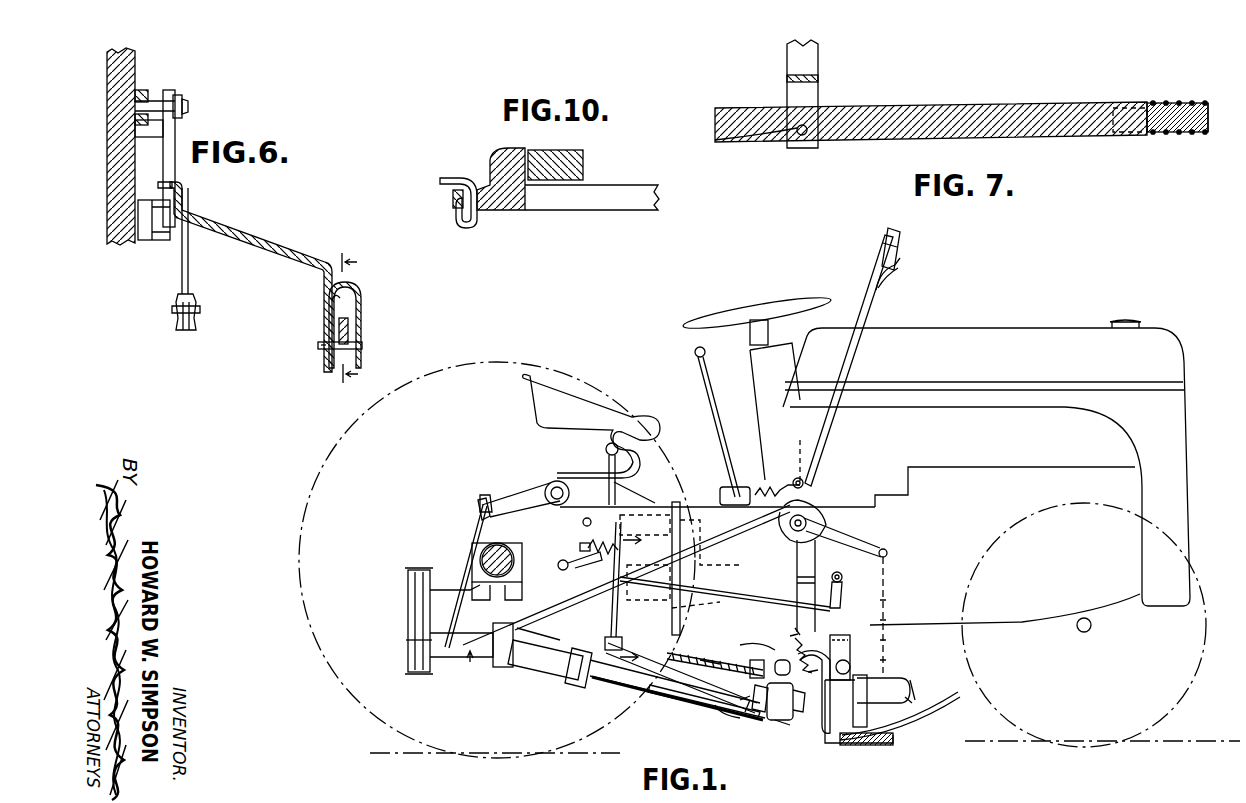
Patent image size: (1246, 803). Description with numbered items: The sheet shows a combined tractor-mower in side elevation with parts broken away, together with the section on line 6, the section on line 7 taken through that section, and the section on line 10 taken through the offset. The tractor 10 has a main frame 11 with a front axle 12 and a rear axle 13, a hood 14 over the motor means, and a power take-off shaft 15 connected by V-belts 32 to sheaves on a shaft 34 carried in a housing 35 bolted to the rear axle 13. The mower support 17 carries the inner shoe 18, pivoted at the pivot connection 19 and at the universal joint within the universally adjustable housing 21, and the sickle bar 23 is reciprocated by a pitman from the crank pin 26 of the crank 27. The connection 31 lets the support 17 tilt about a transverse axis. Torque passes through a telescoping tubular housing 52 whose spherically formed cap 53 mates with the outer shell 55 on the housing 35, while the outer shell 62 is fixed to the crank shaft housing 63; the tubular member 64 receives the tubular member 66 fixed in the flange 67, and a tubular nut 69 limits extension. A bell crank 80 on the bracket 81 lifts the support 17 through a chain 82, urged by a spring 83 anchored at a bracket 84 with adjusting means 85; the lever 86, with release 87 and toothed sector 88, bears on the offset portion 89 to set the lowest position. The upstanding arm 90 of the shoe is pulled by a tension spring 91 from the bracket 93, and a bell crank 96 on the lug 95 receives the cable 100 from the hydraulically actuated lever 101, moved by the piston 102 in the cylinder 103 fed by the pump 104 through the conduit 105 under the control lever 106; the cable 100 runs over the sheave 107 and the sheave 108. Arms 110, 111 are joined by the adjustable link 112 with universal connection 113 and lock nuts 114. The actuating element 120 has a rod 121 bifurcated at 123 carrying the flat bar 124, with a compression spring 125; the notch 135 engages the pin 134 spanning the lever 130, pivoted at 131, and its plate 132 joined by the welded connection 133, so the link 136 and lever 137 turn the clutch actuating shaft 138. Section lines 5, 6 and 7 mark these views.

In FIG. 1, the plate 5 is at (630, 700).
In FIG. 1, the section line 6- 6 is at (637, 599).
In FIG. 6, the section line 7- 7 is at (356, 319).
In FIG. 1, the tractor 10 is at (886, 514).
In FIG. 1, the main frame 11 is at (946, 616).
In FIG. 1, the front axle 12 is at (1092, 625).
In FIG. 1, the rear axle 13 is at (492, 547).
In FIG. 1, the hood 14 is at (1170, 350).
In FIG. 1, the power take-off shaft 15 is at (420, 602).
In FIG. 1, the support 17 is at (890, 680).
In FIG. 1, the inner shoe 18 is at (915, 738).
In FIG. 1, the pivot connection 19 is at (920, 690).
In FIG. 1, the universally adjustable housing 21 is at (783, 747).
In FIG. 1, the sickle bar 23 is at (867, 718).
In FIG. 1, the crank pin 26 is at (860, 746).
In FIG. 1, the crank 27 is at (880, 670).
In FIG. 1, the connection 31 is at (888, 634).
In FIG. 1, the V-belts 32 is at (408, 642).
In FIG. 1, the shaft 34 is at (410, 664).
In FIG. 1, the housing 35 is at (450, 662).
In FIG. 1, the tubular housing 52 is at (540, 670).
In FIG. 1, the spherically formed cap 53 is at (555, 632).
In FIG. 1, the spherically formed outer shell 55 is at (503, 670).
In FIG. 1, the outer shell 62 is at (768, 718).
In FIG. 1, the crank shaft housing 63 is at (805, 718).
In FIG. 1, the tubular member 64 is at (585, 692).
In FIG. 1, the tubular member 66 is at (715, 722).
In FIG. 1, the flange 67 is at (748, 714).
In FIG. 1, the tubular nut 69 is at (620, 720).
In FIG. 10, the bell crank 80 is at (570, 210).
In FIG. 1, the bell crank 80 is at (845, 542).
In FIG. 1, the bracket 81 is at (797, 560).
In FIG. 1, the chain 82 is at (884, 612).
In FIG. 10, the spring 83 is at (451, 178).
In FIG. 1, the spring 83 is at (762, 480).
In FIG. 1, the bracket 84 is at (570, 569).
In FIG. 1, the adjusting means 85 is at (592, 545).
In FIG. 10, the lever 86 is at (583, 152).
In FIG. 1, the lever 86 is at (850, 420).
In FIG. 1, the release 87 is at (900, 274).
In FIG. 1, the toothed sector 88 is at (818, 501).
In FIG. 10, the offset portion 89 is at (493, 163).
In FIG. 1, the offset portion 89 is at (801, 456).
In FIG. 1, the upstanding arm 90 is at (818, 688).
In FIG. 1, the tension spring 91 is at (803, 627).
In FIG. 1, the bracket 93 is at (790, 637).
In FIG. 1, the upstanding lug 95 is at (849, 667).
In FIG. 1, the bell crank 96 is at (850, 642).
In FIG. 1, the cable 100 is at (723, 490).
In FIG. 1, the hydraulically actuated lever 101 is at (515, 498).
In FIG. 1, the piston 102 is at (665, 507).
In FIG. 1, the hydraulic cylinder 103 is at (636, 492).
In FIG. 1, the pump 104 is at (695, 614).
In FIG. 1, the conduit 105 is at (700, 572).
In FIG. 1, the lever 106 is at (608, 472).
In FIG. 1, the sheave 107 is at (440, 602).
In FIG. 1, the sheave 108 is at (785, 530).
In FIG. 1, the arm 110 is at (730, 674).
In FIG. 1, the arm 111 is at (780, 662).
In FIG. 1, the adjustable link 112 is at (750, 668).
In FIG. 1, the universal connection 113 is at (747, 634).
In FIG. 1, the lock nuts 114 is at (720, 662).
In FIG. 7, the actuating element 120 is at (973, 145).
In FIG. 7, the rod 121 is at (1208, 105).
In FIG. 1, the rod 121 is at (650, 689).
In FIG. 7, the bifurcation 123 is at (1128, 135).
In FIG. 6, the flat bar 124 is at (348, 328).
In FIG. 7, the flat bar 124 is at (1087, 120).
In FIG. 1, the flat bar 124 is at (660, 647).
In FIG. 7, the compression spring 125 is at (1188, 133).
In FIG. 1, the compression spring 125 is at (690, 724).
In FIG. 6, the lever 130 is at (244, 232).
In FIG. 7, the lever 130 is at (815, 55).
In FIG. 1, the lever 130 is at (618, 622).
In FIG. 6, the pivot 131 is at (160, 100).
In FIG. 1, the pivot 131 is at (583, 526).
In FIG. 6, the plate 132 is at (358, 304).
In FIG. 7, the plate 132 is at (818, 80).
In FIG. 1, the plate 132 is at (604, 644).
In FIG. 6, the welded connection 133 is at (326, 306).
In FIG. 6, the pin 134 is at (325, 346).
In FIG. 7, the pin 134 is at (801, 135).
In FIG. 7, the notch 135 is at (783, 138).
In FIG. 6, the link 136 is at (190, 265).
In FIG. 1, the link 136 is at (725, 588).
In FIG. 6, the lever 137 is at (182, 248).
In FIG. 1, the lever 137 is at (840, 596).
In FIG. 6, the clutch actuating shaft 138 is at (160, 215).
In FIG. 1, the clutch actuating shaft 138 is at (845, 572).